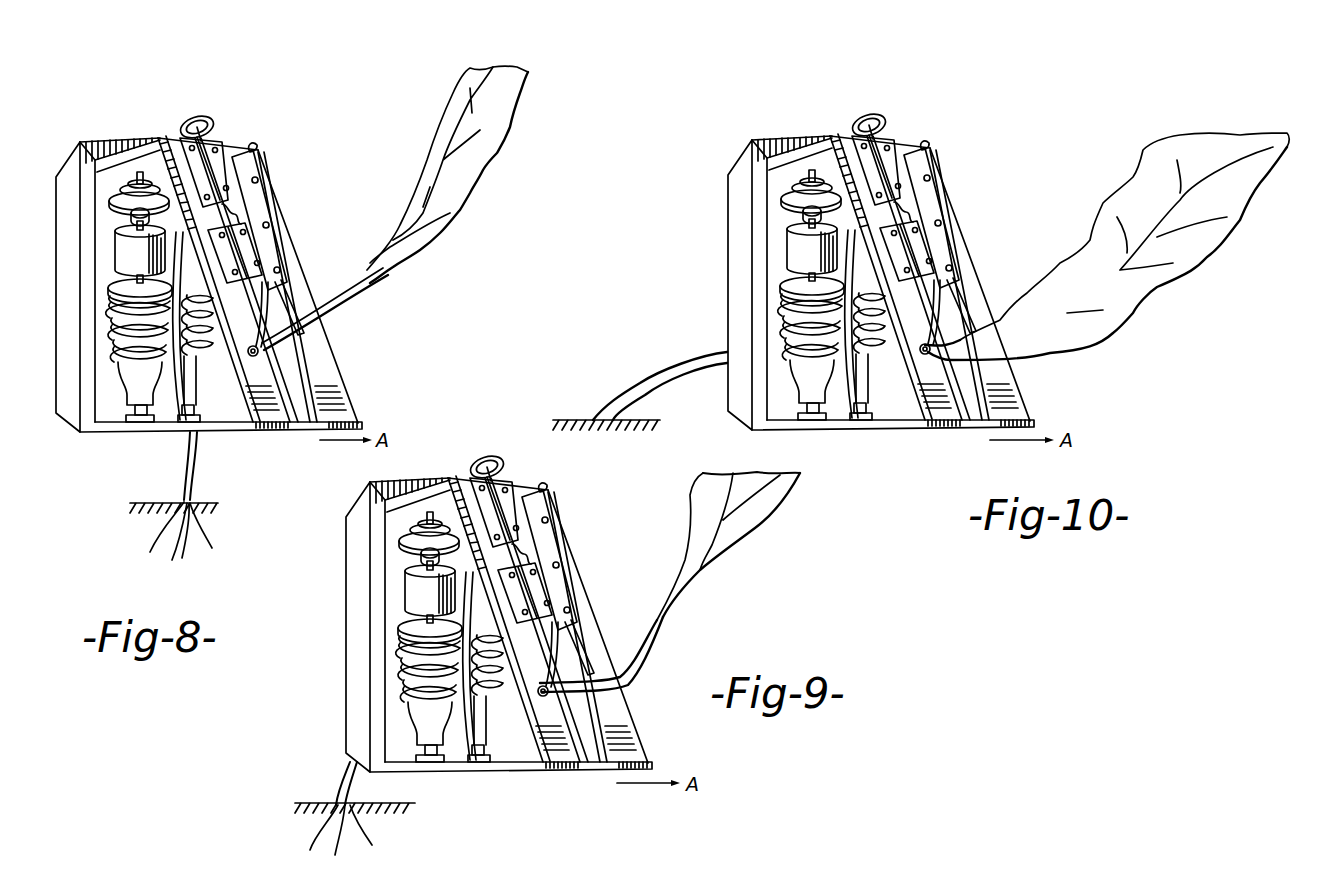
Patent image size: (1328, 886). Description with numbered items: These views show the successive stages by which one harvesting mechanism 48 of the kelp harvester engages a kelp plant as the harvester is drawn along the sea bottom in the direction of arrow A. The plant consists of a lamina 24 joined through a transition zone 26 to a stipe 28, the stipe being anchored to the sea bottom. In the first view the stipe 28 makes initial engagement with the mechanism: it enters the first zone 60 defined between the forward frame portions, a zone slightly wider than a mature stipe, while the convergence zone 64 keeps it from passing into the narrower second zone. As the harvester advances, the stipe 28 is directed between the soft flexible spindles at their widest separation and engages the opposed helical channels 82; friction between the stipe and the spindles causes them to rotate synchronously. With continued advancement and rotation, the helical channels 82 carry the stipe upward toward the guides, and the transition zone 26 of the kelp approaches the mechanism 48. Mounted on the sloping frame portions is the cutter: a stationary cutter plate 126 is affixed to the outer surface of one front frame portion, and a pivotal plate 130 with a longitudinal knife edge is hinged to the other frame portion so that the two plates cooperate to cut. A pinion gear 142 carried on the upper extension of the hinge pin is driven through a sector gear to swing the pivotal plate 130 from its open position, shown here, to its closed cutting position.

In FIG. 8, the lamina 24 is at (462, 190).
In FIG. 9, the lamina 24 is at (775, 505).
In FIG. 10, the lamina 24 is at (1125, 303).
In FIG. 8, the transition zone 26 is at (383, 268).
In FIG. 9, the transition zone 26 is at (703, 557).
In FIG. 10, the transition zone 26 is at (960, 350).
In FIG. 8, the stipe 28 is at (197, 453).
In FIG. 9, the stipe 28 is at (641, 658).
In FIG. 10, the stipe 28 is at (665, 380).
In FIG. 8, the harvesting mechanism 48 is at (282, 181).
In FIG. 9, the harvesting mechanism 48 is at (585, 559).
In FIG. 10, the harvesting mechanism 48 is at (953, 190).
In FIG. 8, the first zone 60 is at (292, 404).
In FIG. 9, the first zone 60 is at (582, 743).
In FIG. 10, the first zone 60 is at (964, 401).
In FIG. 8, the convergence zone 64 is at (299, 318).
In FIG. 9, the helical channels 82 is at (410, 684).
In FIG. 8, the stationary cutter plate 126 is at (263, 203).
In FIG. 9, the stationary cutter plate 126 is at (565, 588).
In FIG. 10, the stationary cutter plate 126 is at (950, 243).
In FIG. 8, the pivotal plate 130 is at (247, 319).
In FIG. 9, the pivotal plate 130 is at (534, 659).
In FIG. 10, the pivotal plate 130 is at (916, 317).
In FIG. 8, the pinion gear 142 is at (182, 124).
In FIG. 9, the pinion gear 142 is at (497, 478).